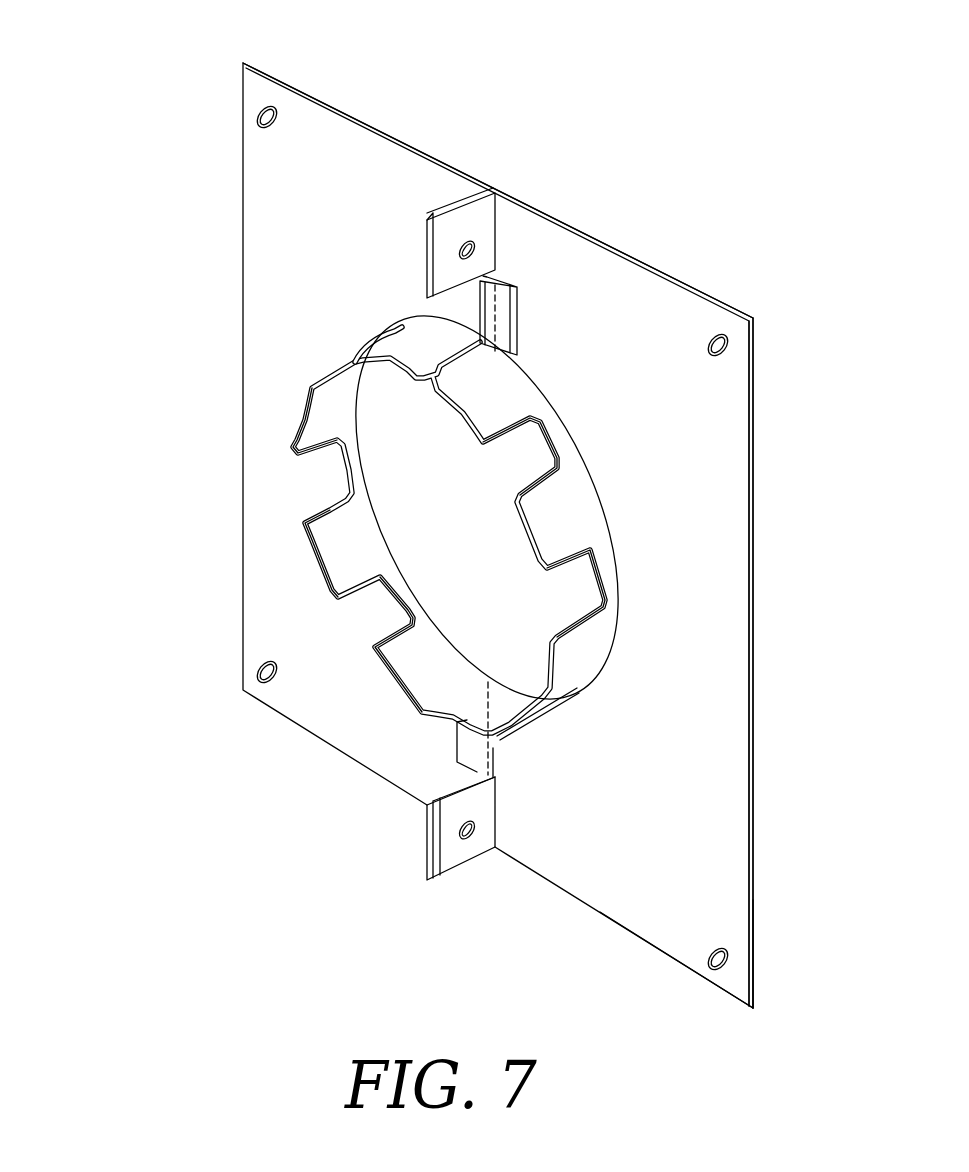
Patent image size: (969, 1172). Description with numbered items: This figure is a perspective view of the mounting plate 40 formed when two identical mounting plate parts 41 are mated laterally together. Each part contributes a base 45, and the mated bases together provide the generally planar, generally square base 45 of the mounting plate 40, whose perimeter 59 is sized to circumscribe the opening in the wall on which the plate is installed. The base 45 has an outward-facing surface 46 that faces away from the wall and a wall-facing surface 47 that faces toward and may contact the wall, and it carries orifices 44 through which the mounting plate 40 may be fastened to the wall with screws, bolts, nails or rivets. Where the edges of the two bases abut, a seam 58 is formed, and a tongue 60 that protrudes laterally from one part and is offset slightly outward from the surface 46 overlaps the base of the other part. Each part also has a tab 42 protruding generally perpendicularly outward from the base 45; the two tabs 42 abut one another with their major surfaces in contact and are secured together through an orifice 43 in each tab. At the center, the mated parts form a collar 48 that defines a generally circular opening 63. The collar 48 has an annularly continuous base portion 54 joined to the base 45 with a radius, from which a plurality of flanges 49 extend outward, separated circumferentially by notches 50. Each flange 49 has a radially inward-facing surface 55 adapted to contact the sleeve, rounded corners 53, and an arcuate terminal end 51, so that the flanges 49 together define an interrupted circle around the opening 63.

The mounting plate 40 is at (160, 50).
The mounting plate parts 41 is at (516, 226).
The tab 42 is at (432, 880).
The orifice 43 is at (472, 840).
The orifices 44 is at (712, 966).
The base 45 is at (724, 907).
The outward-facing surface 46 is at (724, 800).
The wall-facing surface 47 is at (758, 382).
The collar 48 is at (355, 362).
The flanges 49 is at (572, 518).
The notches 50 is at (590, 597).
The terminal ends 51 is at (312, 548).
The rounded corners 53 is at (305, 448).
The base portion 54 is at (550, 442).
The radially inward-facing surface 55 is at (425, 652).
The seam 58 is at (498, 299).
The perimeter 59 is at (592, 233).
The tongue 60 is at (505, 333).
The opening 63 is at (424, 513).